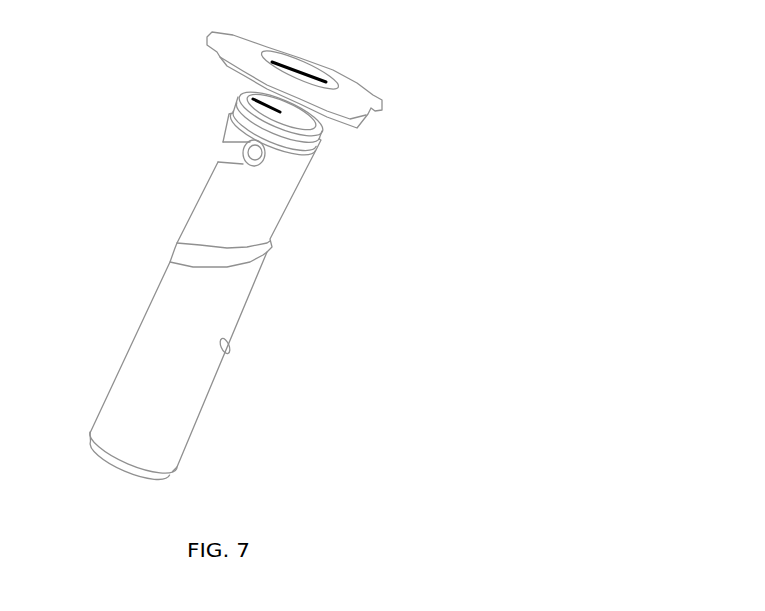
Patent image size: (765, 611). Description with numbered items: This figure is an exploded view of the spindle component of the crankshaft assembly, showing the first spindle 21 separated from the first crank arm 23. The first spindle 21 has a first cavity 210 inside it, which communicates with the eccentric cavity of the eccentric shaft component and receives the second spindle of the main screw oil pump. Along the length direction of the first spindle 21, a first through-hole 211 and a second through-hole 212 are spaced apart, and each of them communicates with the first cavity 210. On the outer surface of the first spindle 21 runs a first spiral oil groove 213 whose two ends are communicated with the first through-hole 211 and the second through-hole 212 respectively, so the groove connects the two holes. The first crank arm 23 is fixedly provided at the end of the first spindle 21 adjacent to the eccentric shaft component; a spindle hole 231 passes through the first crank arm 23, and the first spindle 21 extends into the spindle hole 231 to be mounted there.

The first spindle 21 is at (153, 350).
The first cavity 210 is at (270, 110).
The second through-hole 212 is at (252, 152).
The first spiral oil groove 213 is at (250, 252).
The first through-hole 211 is at (225, 347).
The first crank arm 23 is at (357, 90).
The spindle hole 231 is at (295, 75).